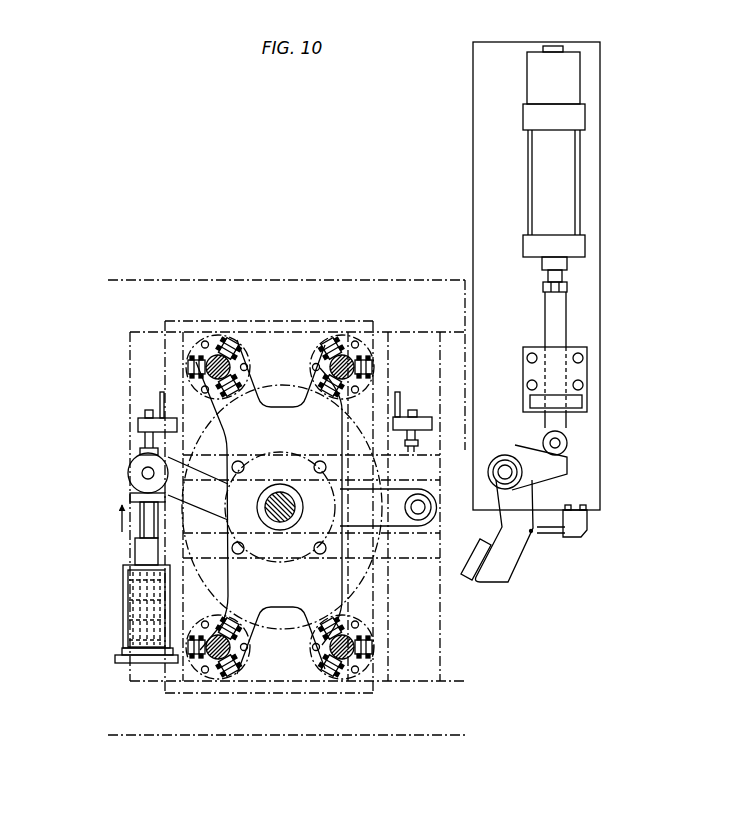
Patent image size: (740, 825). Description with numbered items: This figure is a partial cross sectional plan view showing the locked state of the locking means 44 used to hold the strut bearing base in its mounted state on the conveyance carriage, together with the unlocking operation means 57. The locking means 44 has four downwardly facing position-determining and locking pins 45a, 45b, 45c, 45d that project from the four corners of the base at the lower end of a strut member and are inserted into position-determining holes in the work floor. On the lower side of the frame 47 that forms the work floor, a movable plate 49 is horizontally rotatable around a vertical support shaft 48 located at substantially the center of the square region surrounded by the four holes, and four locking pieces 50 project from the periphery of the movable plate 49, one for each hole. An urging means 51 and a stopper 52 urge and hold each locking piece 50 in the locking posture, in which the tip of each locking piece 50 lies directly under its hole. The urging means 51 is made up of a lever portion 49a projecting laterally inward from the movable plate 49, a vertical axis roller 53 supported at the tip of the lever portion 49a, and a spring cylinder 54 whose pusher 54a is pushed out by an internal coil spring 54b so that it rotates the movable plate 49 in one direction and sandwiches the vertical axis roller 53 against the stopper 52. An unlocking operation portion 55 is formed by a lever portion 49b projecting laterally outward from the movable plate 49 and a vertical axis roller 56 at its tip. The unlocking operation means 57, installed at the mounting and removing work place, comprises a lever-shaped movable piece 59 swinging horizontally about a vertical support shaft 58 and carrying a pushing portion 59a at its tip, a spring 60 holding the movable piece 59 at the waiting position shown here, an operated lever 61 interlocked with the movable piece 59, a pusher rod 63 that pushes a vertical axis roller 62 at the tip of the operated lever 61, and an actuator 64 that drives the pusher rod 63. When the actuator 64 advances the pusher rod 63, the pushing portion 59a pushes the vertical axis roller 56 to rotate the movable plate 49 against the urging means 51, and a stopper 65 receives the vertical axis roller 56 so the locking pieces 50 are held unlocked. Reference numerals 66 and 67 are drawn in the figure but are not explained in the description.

The locking means 44 is at (283, 398).
The position-determining and locking pin 45a is at (352, 341).
The position-determining and locking pin 45b is at (217, 355).
The position-determining and locking pin 45c is at (218, 660).
The position-determining and locking pin 45d is at (348, 677).
The frame 47 is at (137, 398).
The vertical support shaft 48 is at (283, 492).
The movable plate 49 is at (296, 588).
The lever portion 49a is at (190, 492).
The lever portion 49b is at (380, 515).
The locking piece 50 is at (203, 397).
The urging means 51 is at (122, 488).
The stopper 52 is at (141, 449).
The vertical axis roller 53 is at (128, 473).
The spring cylinder 54 is at (121, 583).
The pusher 54a is at (140, 521).
The coil spring 54b is at (130, 638).
The unlocking operation portion 55 is at (437, 488).
The vertical axis roller 56 is at (438, 510).
The unlocking operation means 57 is at (605, 412).
The vertical support shaft 58 is at (505, 466).
The lever-shaped movable piece 59 is at (518, 550).
The pushing portion 59a is at (473, 563).
The spring 60 is at (553, 538).
The operated lever 61 is at (543, 470).
The vertical axis roller 62 is at (568, 443).
The pusher rod 63 is at (557, 331).
The actuator 64 is at (560, 192).
The stopper 65 is at (420, 447).
The shaft 66 is at (223, 333).
The clamp 67 is at (318, 352).